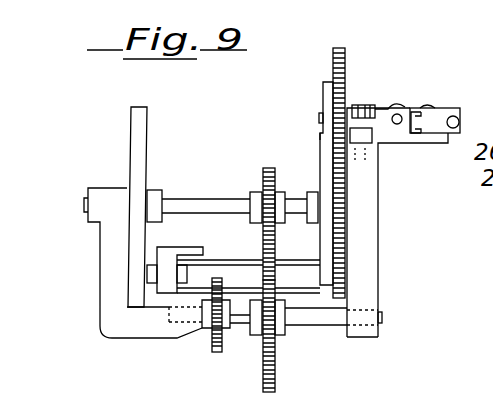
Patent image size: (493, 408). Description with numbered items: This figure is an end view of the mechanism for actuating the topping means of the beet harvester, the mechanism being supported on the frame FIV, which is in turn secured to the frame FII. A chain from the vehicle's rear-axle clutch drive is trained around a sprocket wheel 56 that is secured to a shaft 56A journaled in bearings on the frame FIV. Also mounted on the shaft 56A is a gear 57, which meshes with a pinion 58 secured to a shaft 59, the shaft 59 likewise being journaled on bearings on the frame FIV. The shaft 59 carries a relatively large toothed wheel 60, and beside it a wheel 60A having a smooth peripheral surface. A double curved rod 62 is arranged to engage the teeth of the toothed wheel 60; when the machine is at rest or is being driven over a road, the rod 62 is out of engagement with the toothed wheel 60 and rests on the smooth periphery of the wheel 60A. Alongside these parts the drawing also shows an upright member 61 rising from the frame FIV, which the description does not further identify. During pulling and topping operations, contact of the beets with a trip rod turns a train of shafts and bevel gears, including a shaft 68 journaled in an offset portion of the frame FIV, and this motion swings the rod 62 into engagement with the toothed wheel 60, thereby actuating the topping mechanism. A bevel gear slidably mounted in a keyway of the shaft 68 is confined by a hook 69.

The sprocket wheel 56 is at (212, 345).
The shaft 56A is at (240, 318).
The gear 57 is at (275, 376).
The pinion 58 is at (268, 168).
The shaft 59 is at (204, 199).
The toothed wheel 60 is at (340, 148).
The wheel 60A is at (327, 168).
The bar 61 is at (141, 120).
The double curved rod 62 is at (327, 98).
The shaft 68 is at (398, 114).
The hook 69 is at (422, 117).
The frame FIV is at (113, 258).
The frame FII is at (173, 247).